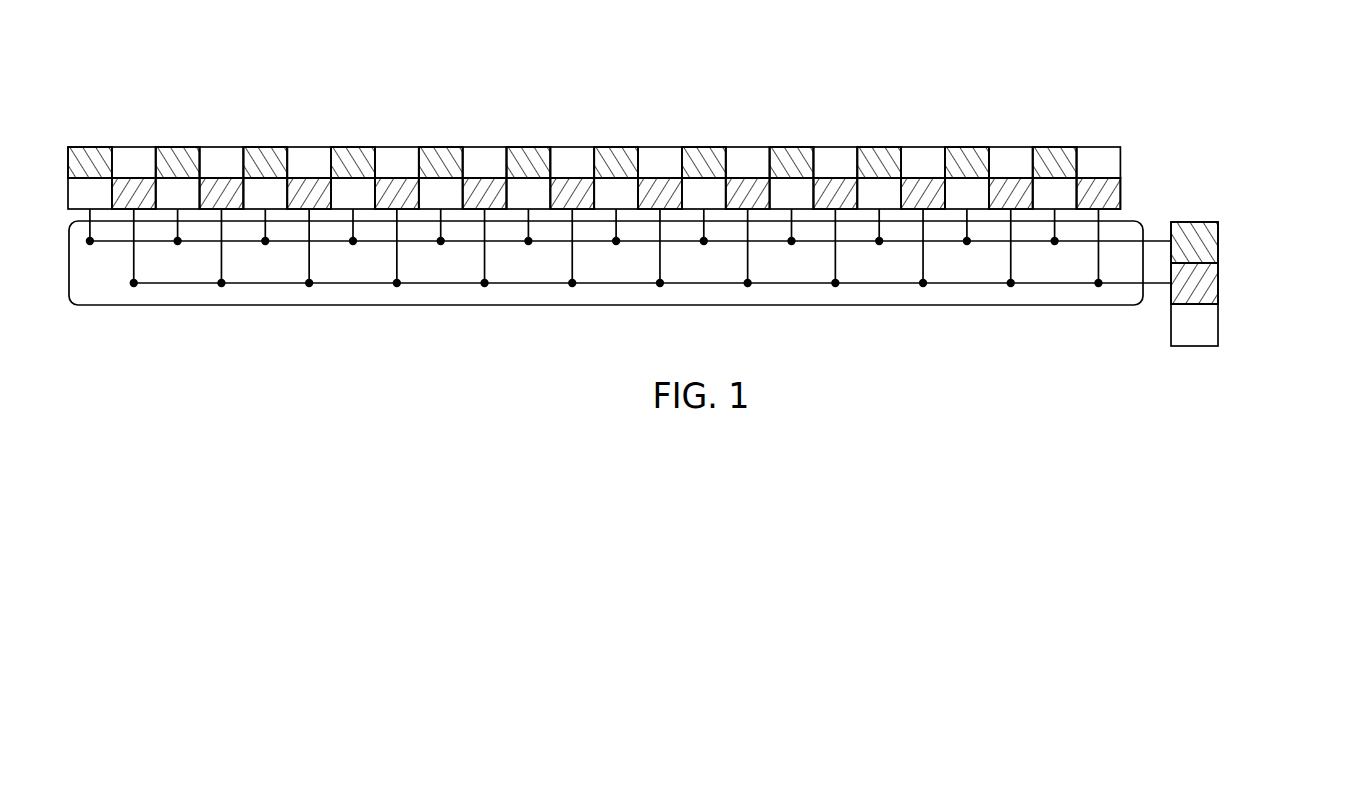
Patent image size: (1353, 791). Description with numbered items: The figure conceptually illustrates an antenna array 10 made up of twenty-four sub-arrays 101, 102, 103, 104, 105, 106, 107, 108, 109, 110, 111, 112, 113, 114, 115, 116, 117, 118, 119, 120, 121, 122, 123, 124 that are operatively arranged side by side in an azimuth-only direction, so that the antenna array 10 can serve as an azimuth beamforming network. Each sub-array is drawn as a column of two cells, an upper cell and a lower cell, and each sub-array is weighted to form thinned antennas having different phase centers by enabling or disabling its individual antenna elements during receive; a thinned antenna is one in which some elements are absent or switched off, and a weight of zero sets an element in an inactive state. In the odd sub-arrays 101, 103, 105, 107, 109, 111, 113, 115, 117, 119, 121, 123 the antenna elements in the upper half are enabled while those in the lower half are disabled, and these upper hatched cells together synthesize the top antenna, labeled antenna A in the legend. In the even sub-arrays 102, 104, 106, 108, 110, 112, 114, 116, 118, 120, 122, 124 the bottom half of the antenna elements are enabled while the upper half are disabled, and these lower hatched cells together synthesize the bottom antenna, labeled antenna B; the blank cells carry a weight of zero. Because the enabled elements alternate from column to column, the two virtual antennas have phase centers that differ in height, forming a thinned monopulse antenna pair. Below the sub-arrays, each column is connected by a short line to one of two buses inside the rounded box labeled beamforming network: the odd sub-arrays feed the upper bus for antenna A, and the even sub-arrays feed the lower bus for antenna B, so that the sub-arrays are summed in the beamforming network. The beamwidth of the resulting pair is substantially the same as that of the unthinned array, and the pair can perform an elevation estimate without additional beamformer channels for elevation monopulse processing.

The antenna array 10 is at (1100, 71).
The sub-array 101 is at (90, 183).
The sub-array 102 is at (134, 204).
The sub-array 103 is at (178, 183).
The sub-array 104 is at (222, 204).
The sub-array 105 is at (265, 183).
The sub-array 106 is at (309, 204).
The sub-array 107 is at (353, 183).
The sub-array 108 is at (397, 204).
The sub-array 109 is at (441, 183).
The sub-array 110 is at (485, 204).
The sub-array 111 is at (529, 183).
The sub-array 112 is at (572, 204).
The sub-array 113 is at (616, 183).
The sub-array 114 is at (660, 204).
The sub-array 115 is at (704, 183).
The sub-array 116 is at (748, 204).
The sub-array 117 is at (792, 183).
The sub-array 118 is at (835, 204).
The sub-array 119 is at (879, 183).
The sub-array 120 is at (923, 204).
The sub-array 121 is at (967, 183).
The sub-array 122 is at (1011, 204).
The sub-array 123 is at (1055, 183).
The sub-array 124 is at (1099, 204).